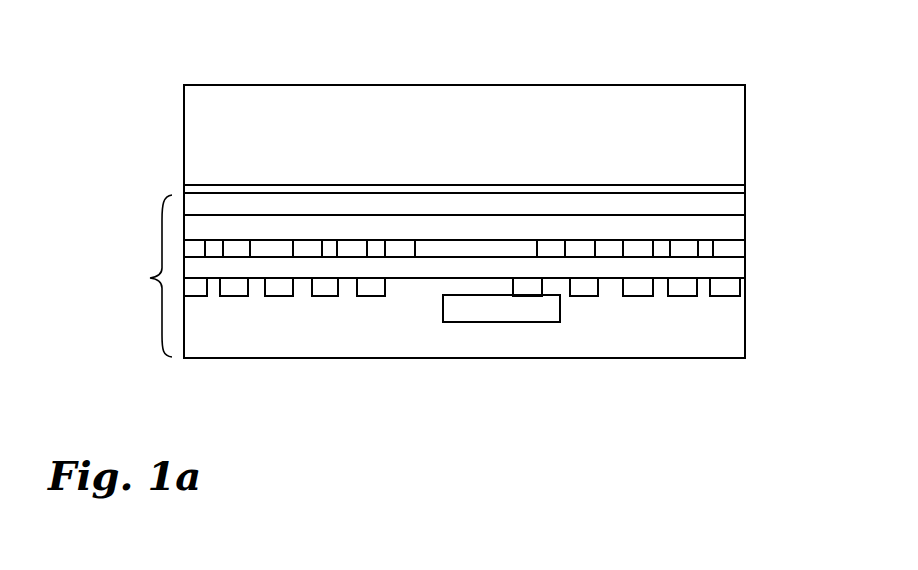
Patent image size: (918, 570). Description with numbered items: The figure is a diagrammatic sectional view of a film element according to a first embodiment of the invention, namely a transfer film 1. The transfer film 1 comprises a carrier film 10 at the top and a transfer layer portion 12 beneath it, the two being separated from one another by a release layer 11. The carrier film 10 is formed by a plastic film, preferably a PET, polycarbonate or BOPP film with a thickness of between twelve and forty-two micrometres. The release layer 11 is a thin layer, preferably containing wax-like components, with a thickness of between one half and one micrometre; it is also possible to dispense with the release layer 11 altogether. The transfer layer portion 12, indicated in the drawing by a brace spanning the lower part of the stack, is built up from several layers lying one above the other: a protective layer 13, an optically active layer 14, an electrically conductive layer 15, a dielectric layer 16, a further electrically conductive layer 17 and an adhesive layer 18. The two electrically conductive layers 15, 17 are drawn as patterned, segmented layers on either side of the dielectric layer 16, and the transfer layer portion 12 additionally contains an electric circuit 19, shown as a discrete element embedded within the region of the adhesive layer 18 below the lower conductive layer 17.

The transfer film 1 is at (644, 58).
The carrier film 10 is at (737, 115).
The release layer 11 is at (738, 188).
The transfer layer portion 12 is at (142, 276).
The protective layer 13 is at (740, 207).
The optically active layer 14 is at (738, 228).
The electrically conductive layer 15 is at (737, 250).
The dielectric layer 16 is at (737, 268).
The electrically conductive layer 17 is at (737, 289).
The adhesive layer 18 is at (733, 333).
The electric circuit 19 is at (507, 313).